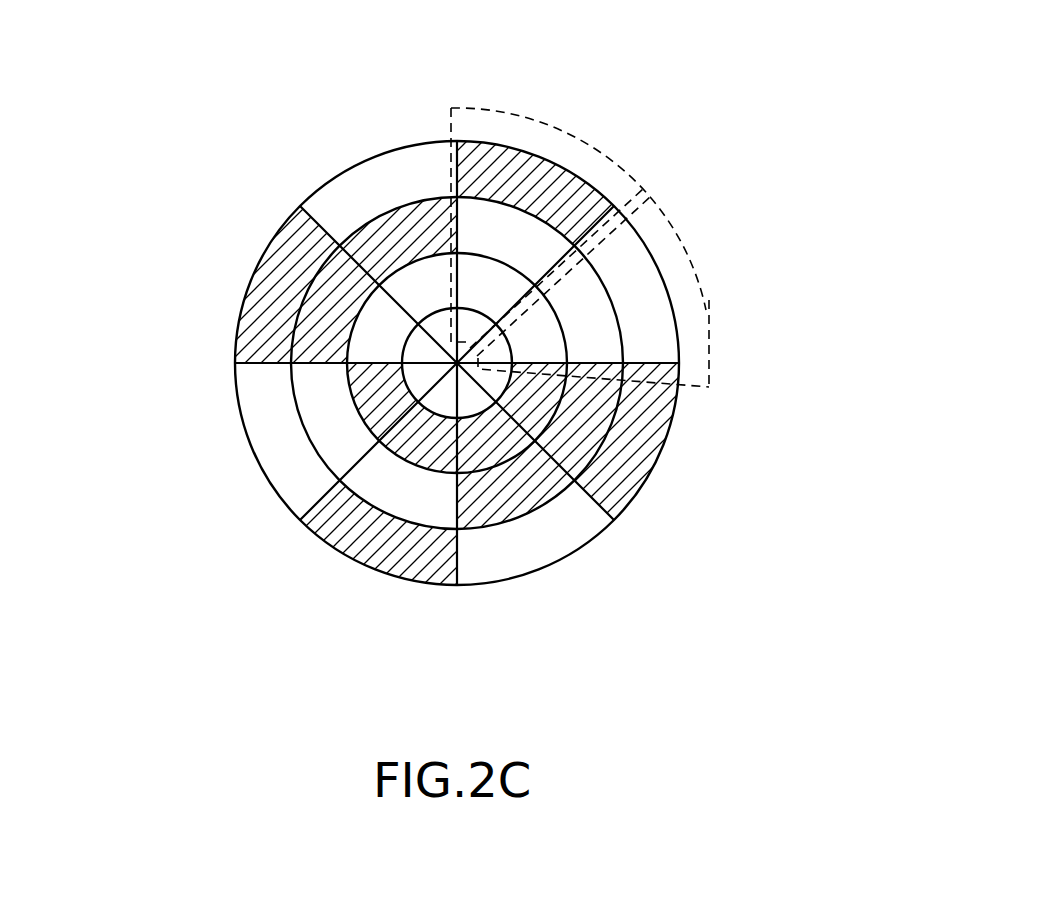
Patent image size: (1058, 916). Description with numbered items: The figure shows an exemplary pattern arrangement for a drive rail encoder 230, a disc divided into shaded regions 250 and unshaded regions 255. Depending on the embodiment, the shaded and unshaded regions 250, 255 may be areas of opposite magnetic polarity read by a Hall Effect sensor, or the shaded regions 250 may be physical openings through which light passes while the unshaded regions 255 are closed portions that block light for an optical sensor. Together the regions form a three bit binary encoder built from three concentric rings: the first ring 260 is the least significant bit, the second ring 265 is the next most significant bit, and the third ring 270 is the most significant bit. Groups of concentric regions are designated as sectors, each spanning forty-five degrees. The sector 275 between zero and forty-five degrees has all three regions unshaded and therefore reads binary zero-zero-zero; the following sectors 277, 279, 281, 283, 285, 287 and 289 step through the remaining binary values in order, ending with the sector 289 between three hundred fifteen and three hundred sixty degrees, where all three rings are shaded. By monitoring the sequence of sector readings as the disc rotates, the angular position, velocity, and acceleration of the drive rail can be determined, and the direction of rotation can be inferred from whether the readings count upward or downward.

The drive rail encoder 230 is at (619, 202).
The shaded regions 250 is at (532, 246).
The unshaded regions 255 is at (537, 483).
The first ring 260 is at (352, 427).
The second ring 265 is at (305, 452).
The third ring 270 is at (233, 407).
The sector 275 is at (703, 287).
The sector 277 is at (528, 116).
The sector 279 is at (377, 155).
The sector 281 is at (247, 285).
The sector 283 is at (248, 444).
The sector 285 is at (353, 563).
The sector 287 is at (540, 572).
The sector 289 is at (668, 450).